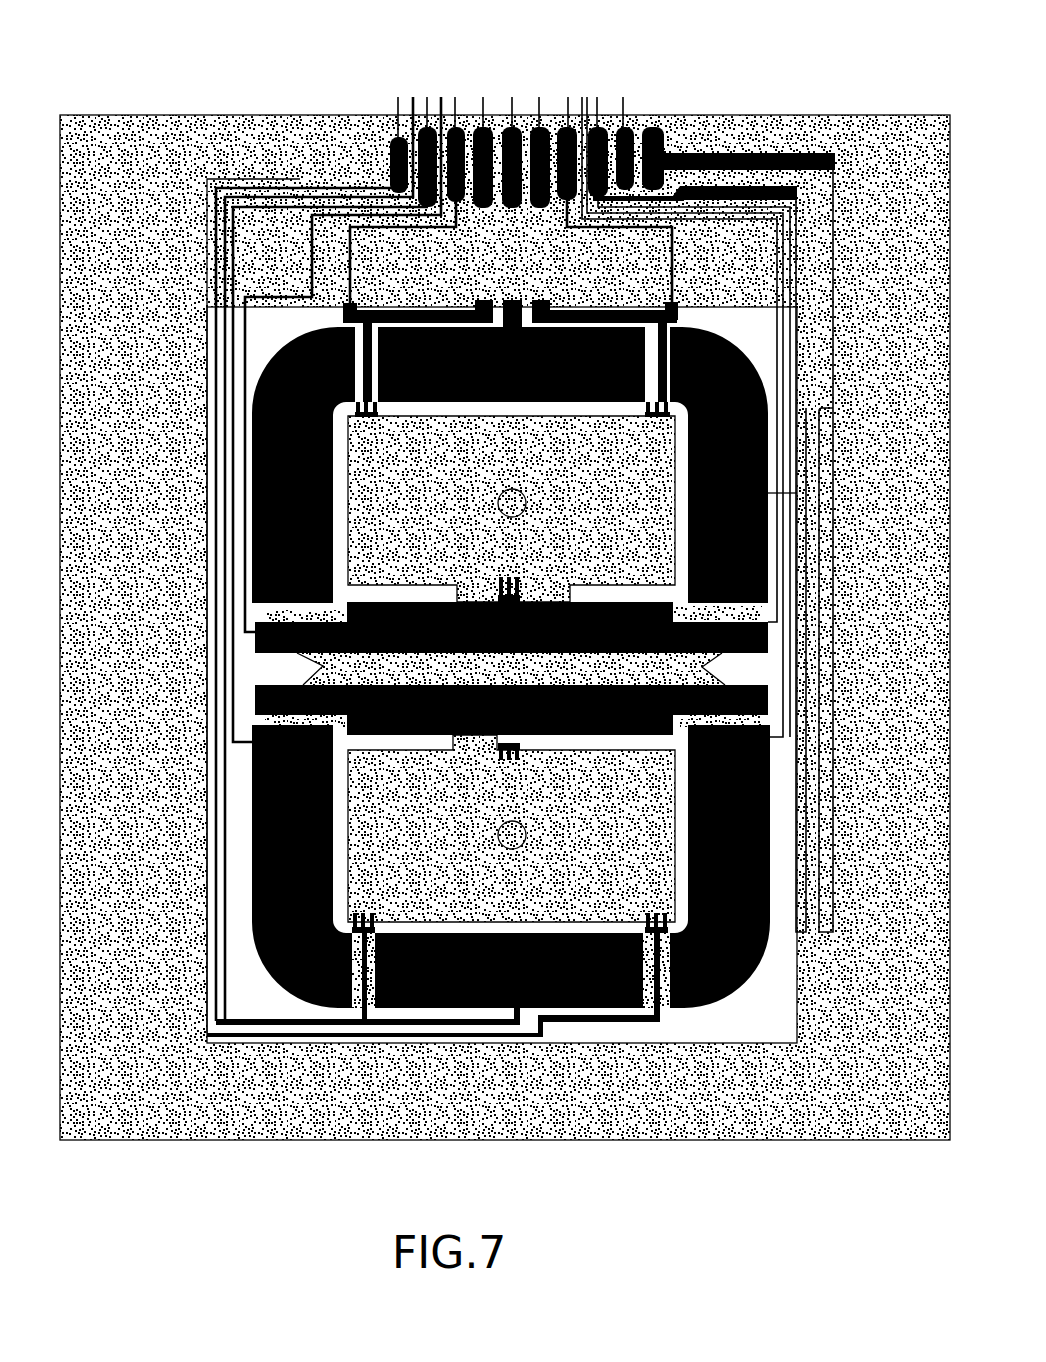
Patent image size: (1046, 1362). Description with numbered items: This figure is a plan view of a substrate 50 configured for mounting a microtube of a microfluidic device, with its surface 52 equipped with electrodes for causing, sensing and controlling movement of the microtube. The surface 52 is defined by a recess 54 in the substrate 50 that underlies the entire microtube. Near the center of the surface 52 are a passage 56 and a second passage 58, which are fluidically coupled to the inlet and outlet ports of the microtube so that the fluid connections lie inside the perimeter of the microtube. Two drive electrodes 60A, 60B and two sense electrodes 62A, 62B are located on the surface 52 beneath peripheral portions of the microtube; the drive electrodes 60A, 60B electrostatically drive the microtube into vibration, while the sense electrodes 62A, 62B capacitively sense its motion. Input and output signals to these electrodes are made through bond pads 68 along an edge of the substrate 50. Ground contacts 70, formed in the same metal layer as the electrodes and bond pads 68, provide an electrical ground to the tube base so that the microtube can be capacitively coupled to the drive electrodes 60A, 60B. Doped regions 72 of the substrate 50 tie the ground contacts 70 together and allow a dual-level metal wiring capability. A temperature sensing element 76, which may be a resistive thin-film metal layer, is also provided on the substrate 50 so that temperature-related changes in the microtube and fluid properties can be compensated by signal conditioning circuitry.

The substrate 50 is at (255, 1182).
The surface 52 is at (565, 1108).
The recess 54 is at (775, 1030).
The passage 56 is at (519, 493).
The second passage 58 is at (521, 826).
The drive electrode 60A is at (530, 400).
The drive electrode 60B is at (485, 933).
The sense electrode 62A is at (335, 483).
The sense electrode 62B is at (336, 821).
The bond pads 68 is at (462, 80).
The ground contacts 70 is at (551, 602).
The doped regions 72 is at (456, 562).
The temperature sensing element 76 is at (866, 882).